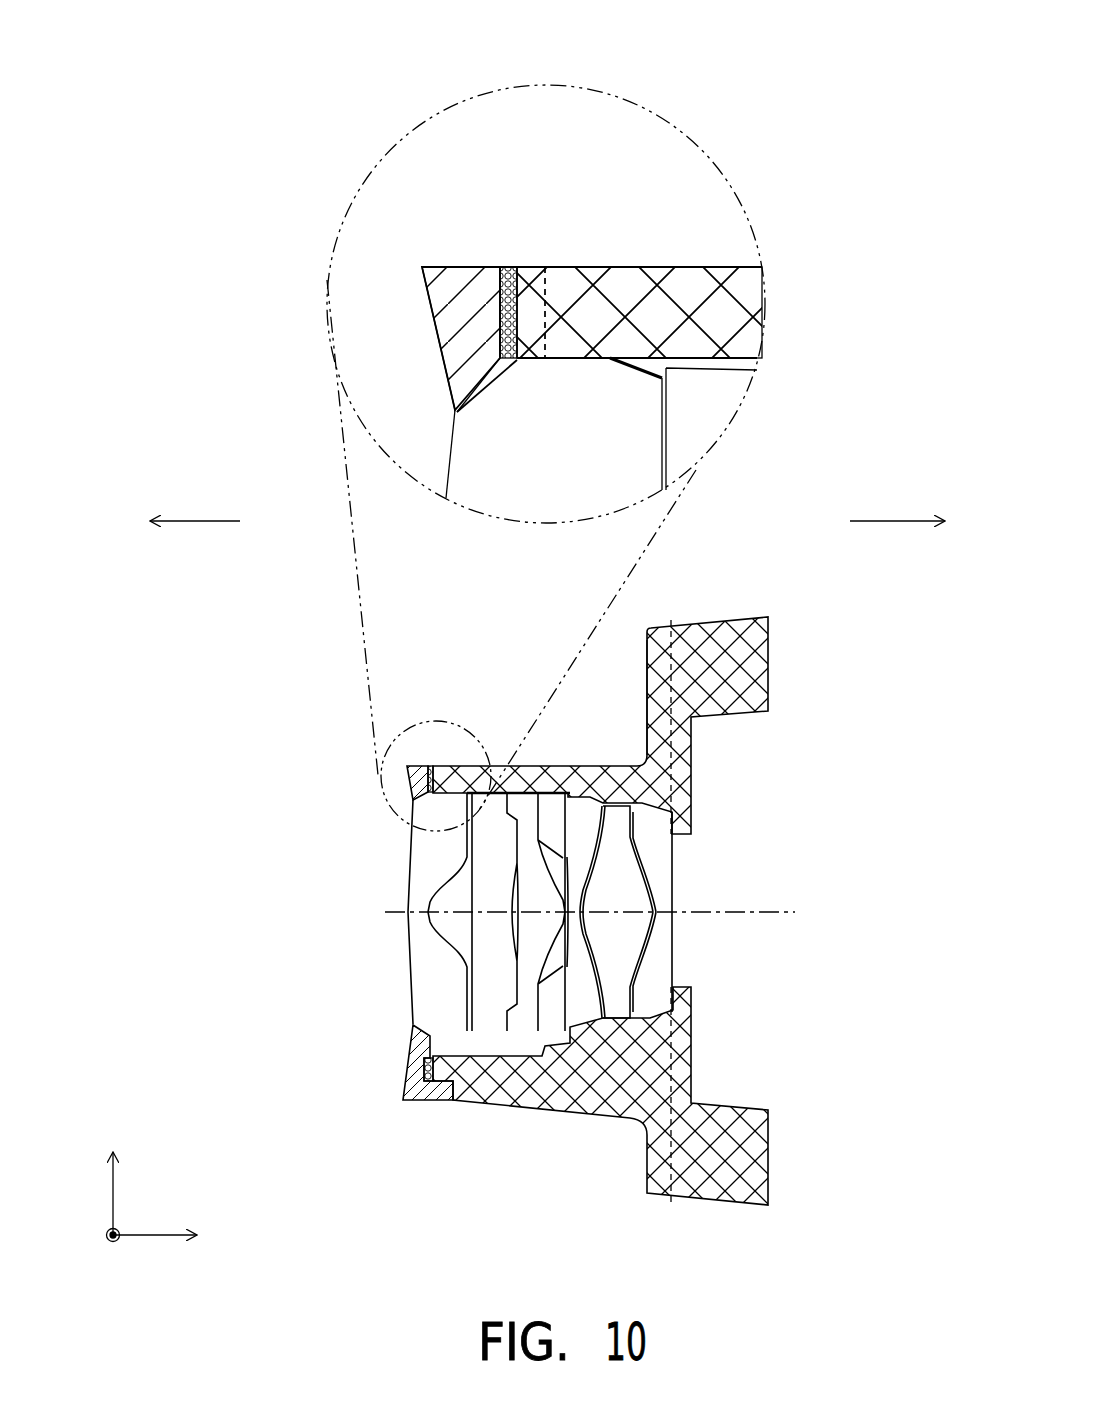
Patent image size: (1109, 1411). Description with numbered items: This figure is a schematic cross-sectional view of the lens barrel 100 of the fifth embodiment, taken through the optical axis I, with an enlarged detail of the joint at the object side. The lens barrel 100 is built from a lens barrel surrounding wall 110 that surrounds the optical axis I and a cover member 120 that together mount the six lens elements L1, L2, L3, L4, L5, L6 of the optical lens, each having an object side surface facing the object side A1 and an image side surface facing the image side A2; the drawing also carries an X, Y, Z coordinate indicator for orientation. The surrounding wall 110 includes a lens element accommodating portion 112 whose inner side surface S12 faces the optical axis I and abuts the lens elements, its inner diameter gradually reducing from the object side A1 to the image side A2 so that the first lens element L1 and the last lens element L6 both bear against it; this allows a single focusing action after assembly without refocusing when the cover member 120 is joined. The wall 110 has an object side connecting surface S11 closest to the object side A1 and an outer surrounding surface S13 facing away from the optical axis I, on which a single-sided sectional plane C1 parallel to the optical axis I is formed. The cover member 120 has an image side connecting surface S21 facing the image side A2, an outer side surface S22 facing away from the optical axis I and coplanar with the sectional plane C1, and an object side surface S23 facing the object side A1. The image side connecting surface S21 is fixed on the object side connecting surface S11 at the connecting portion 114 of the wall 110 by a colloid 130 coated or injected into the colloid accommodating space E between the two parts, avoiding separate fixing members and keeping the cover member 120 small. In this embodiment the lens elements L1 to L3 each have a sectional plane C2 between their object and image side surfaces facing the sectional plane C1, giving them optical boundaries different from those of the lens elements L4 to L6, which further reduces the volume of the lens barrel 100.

The lens barrel 100 is at (964, 1296).
The lens barrel surrounding wall 110 is at (706, 589).
The lens element accommodating portion 112 is at (742, 293).
The connecting portion 114 is at (545, 277).
The cover member 120 is at (441, 275).
The colloid 130 is at (506, 291).
The object side connecting surface S11 is at (511, 293).
The inner side surface S12 is at (600, 363).
The outer surrounding surface S13 is at (625, 265).
The image side connecting surface S21 is at (556, 345).
The outer side surface S22 is at (463, 265).
The object side surface S23 is at (432, 323).
The sectional plane C1 is at (720, 265).
The sectional plane C2 is at (582, 361).
The colloid accommodating space E is at (530, 361).
The lens element L1 is at (444, 1040).
The lens element L2 is at (488, 1040).
The lens element L3 is at (527, 1040).
The lens element L4 is at (583, 1020).
The lens element L5 is at (622, 1007).
The lens element L6 is at (657, 997).
The optical axis I is at (600, 912).
The object side A1 is at (195, 500).
The image side A2 is at (897, 500).
The X axis X is at (170, 1236).
The Y axis Y is at (112, 1169).
The Z axis Z is at (102, 1255).